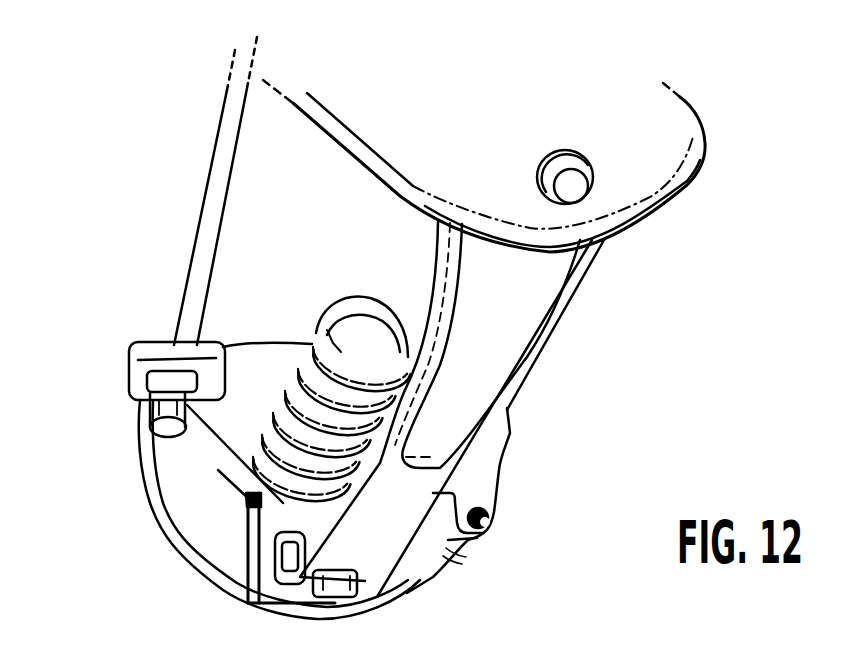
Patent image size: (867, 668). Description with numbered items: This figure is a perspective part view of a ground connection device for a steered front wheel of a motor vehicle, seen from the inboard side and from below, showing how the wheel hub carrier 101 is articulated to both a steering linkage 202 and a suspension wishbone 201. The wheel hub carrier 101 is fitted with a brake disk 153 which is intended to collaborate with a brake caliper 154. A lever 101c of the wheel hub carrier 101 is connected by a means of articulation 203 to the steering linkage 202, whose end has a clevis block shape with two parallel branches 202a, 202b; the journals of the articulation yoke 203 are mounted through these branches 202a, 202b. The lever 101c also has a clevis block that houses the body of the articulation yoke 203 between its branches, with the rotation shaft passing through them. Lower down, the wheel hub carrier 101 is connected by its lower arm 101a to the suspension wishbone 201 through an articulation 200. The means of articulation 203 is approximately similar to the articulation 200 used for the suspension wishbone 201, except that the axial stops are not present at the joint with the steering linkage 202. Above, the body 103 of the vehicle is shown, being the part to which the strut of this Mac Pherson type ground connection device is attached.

The body 103 is at (697, 170).
The steering linkage 202 is at (230, 117).
The means of articulation 203 is at (131, 355).
The branch of clevis block 202a is at (137, 388).
The branch of clevis block 202b is at (227, 368).
The suspension wishbone 201 is at (567, 317).
The brake caliper 154 is at (473, 483).
The brake disk 153 is at (175, 495).
The lever 101c is at (198, 447).
The wheel hub carrier 101 is at (238, 561).
The lower arm 101a is at (275, 522).
The articulation 200 is at (387, 560).